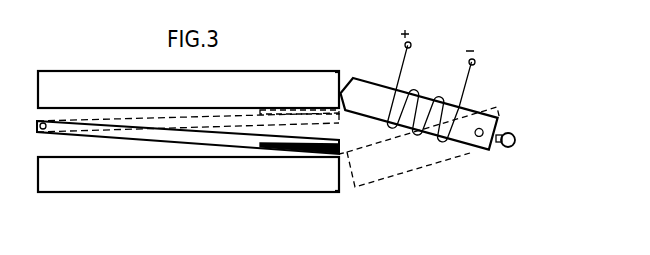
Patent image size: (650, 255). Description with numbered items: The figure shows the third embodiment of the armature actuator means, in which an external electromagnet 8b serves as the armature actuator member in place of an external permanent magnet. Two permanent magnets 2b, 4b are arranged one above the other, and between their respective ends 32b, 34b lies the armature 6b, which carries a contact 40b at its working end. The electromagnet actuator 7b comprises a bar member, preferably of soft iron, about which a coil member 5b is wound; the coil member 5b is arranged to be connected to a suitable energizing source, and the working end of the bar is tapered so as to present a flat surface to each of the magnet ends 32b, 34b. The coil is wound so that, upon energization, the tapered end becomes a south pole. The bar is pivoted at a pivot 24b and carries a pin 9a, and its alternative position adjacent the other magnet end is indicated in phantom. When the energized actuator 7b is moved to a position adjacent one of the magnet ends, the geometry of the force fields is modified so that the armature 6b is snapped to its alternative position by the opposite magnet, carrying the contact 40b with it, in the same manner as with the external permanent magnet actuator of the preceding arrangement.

The permanent magnet 2b is at (118, 71).
The permanent magnet 4b is at (93, 188).
The magnet end 32b is at (340, 71).
The magnet end 34b is at (327, 193).
The armature 6b is at (213, 137).
The armature contact 40b is at (274, 136).
The coil member 5b is at (414, 93).
The external electromagnet 8b is at (460, 115).
The electromagnet actuator 7b is at (456, 150).
The pin 9a is at (480, 149).
The pivot 24b is at (516, 140).